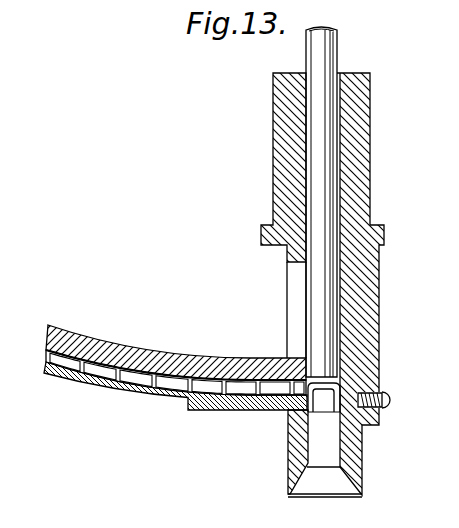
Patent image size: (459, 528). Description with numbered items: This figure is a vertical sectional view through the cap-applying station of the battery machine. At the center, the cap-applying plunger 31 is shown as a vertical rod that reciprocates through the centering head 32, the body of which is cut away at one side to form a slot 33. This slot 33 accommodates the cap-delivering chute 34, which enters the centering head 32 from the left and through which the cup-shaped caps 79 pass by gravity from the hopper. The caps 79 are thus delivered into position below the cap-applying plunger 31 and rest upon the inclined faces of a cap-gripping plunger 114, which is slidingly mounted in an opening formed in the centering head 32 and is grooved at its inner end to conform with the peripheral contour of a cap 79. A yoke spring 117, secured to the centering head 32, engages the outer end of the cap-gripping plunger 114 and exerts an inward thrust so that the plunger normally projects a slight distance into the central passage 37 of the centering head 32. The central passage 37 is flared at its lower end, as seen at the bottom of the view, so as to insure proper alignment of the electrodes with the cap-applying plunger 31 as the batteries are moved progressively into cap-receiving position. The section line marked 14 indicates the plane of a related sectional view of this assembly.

The cap-applying plunger 31 is at (330, 60).
The centering head 32 is at (355, 330).
The slot 33 is at (293, 320).
The cap-delivering chute 34 is at (158, 353).
The cup-shaped caps 79 is at (120, 378).
The central passage 37 is at (330, 453).
The cap-gripping plunger 114 is at (326, 408).
The yoke spring 117 is at (391, 392).
The cam 14 is at (87, 408).